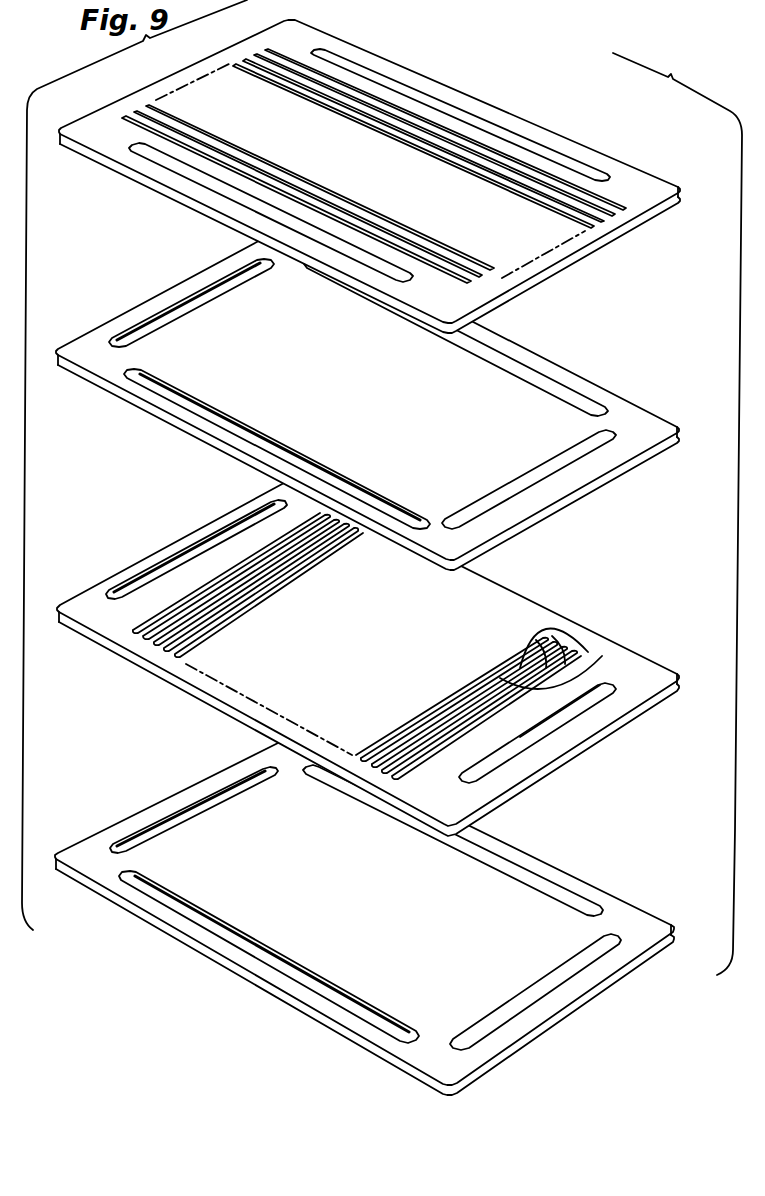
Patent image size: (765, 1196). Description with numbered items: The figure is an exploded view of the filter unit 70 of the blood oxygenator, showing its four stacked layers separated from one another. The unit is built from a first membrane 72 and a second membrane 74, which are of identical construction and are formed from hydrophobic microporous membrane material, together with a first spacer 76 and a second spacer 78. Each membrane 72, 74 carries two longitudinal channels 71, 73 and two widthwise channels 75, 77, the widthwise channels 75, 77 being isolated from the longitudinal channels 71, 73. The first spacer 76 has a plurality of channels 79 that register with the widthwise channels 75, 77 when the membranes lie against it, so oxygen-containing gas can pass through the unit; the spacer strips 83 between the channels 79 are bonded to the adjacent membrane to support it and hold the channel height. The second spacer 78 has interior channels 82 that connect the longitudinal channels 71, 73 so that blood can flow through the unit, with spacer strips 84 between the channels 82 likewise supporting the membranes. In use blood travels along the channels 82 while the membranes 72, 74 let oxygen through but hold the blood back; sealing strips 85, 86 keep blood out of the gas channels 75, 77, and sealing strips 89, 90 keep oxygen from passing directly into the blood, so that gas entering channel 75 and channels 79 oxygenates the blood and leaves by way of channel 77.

The filter unit 70 is at (382, 487).
The first spacer 76 is at (684, 194).
The first membrane 72 is at (548, 517).
The second spacer 78 is at (680, 677).
The second membrane 74 is at (540, 1037).
The widthwise channel 77 is at (158, 325).
The longitudinal channel 71 is at (497, 372).
The longitudinal channel 73 is at (412, 530).
The widthwise channel 75 is at (598, 445).
The sealing strip 89 is at (232, 177).
The sealing strip 90 is at (357, 85).
The spacer strip 83 is at (415, 120).
The channels 79 is at (482, 158).
The sealing strip 86 is at (157, 598).
The spacer strip 84 is at (585, 660).
The interior channels 82 is at (540, 637).
The sealing strip 85 is at (545, 703).